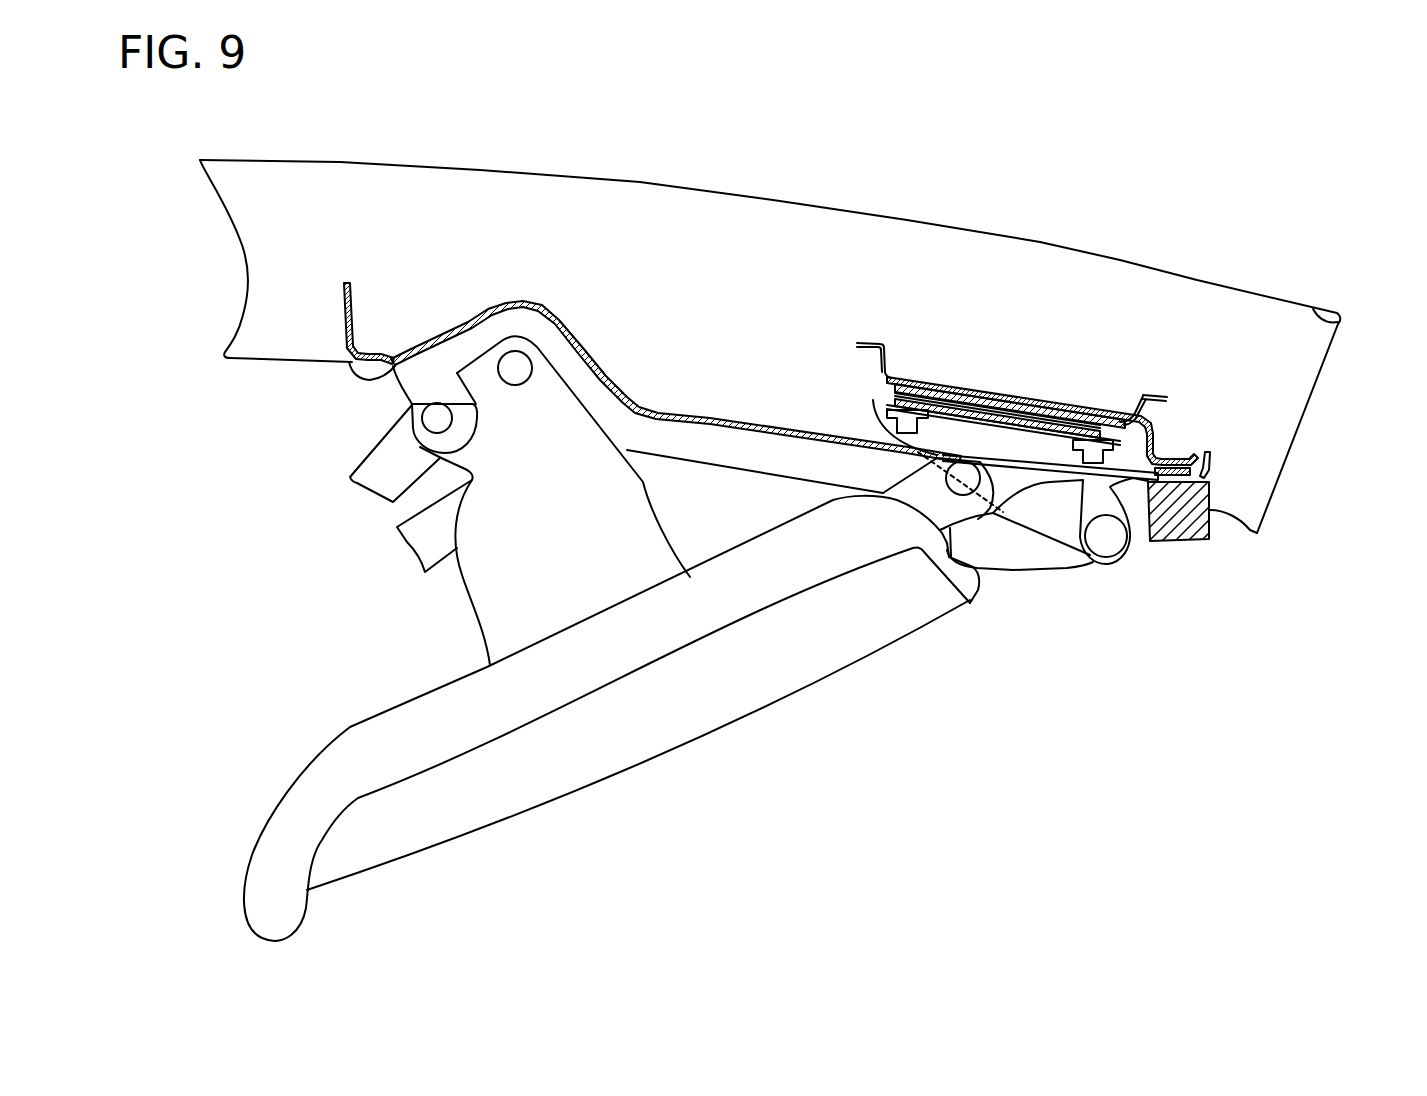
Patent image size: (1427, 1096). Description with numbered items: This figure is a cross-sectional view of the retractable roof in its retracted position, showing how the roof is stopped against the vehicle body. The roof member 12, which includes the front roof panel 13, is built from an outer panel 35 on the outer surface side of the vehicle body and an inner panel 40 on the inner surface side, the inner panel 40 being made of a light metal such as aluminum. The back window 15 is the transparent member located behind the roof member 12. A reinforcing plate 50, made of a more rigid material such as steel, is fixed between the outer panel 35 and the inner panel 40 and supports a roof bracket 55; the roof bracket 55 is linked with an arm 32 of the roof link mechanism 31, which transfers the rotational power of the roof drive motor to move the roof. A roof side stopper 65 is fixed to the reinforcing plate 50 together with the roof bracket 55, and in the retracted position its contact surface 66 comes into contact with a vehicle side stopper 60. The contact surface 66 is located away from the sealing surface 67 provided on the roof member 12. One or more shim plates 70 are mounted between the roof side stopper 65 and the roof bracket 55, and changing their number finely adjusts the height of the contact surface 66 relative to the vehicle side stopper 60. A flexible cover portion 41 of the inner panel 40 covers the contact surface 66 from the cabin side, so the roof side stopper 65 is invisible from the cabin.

The roof member 12 is at (808, 314).
The front roof panel 13 is at (483, 170).
The back window 15 is at (735, 718).
The roof link mechanism 31 is at (975, 505).
The arm 32 is at (905, 482).
The outer panel 35 is at (863, 213).
The inner panel 40 is at (704, 428).
The cover portion 41 is at (1211, 466).
The reinforcing plate 50 is at (1143, 405).
The roof bracket 55 is at (880, 416).
The vehicle side stopper 60 is at (1262, 520).
The roof side stopper 65 is at (1150, 432).
The contact surface 66 is at (1160, 478).
The sealing surface 67 is at (1340, 327).
The shim plate 70 is at (887, 388).